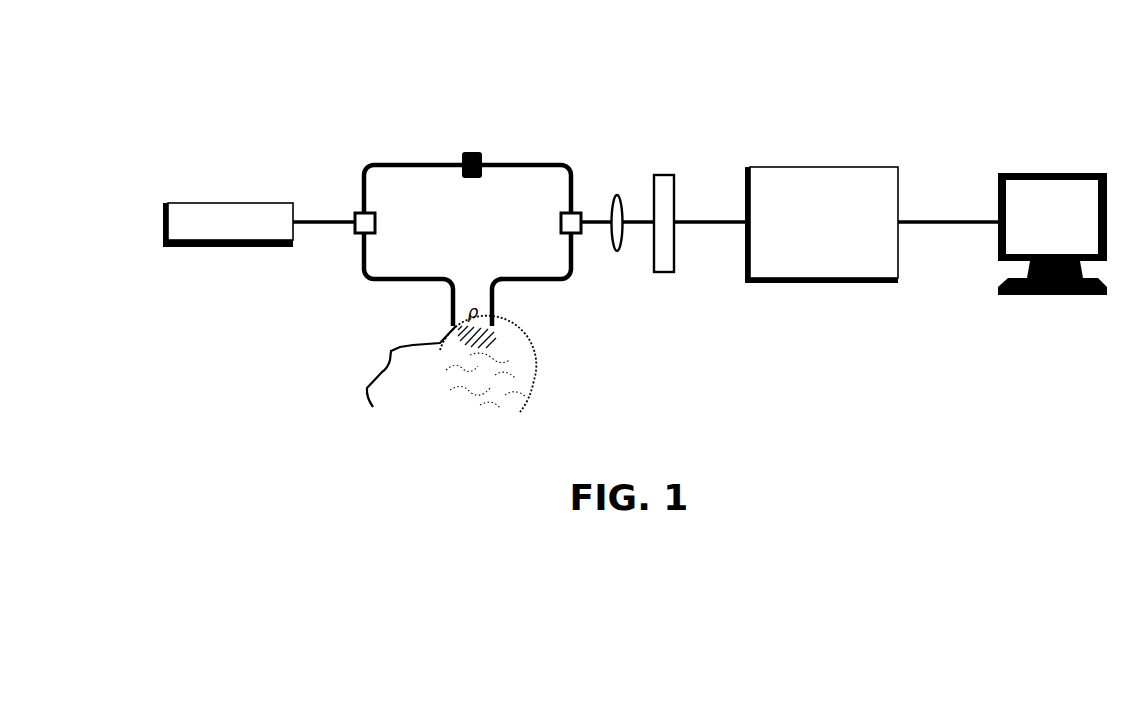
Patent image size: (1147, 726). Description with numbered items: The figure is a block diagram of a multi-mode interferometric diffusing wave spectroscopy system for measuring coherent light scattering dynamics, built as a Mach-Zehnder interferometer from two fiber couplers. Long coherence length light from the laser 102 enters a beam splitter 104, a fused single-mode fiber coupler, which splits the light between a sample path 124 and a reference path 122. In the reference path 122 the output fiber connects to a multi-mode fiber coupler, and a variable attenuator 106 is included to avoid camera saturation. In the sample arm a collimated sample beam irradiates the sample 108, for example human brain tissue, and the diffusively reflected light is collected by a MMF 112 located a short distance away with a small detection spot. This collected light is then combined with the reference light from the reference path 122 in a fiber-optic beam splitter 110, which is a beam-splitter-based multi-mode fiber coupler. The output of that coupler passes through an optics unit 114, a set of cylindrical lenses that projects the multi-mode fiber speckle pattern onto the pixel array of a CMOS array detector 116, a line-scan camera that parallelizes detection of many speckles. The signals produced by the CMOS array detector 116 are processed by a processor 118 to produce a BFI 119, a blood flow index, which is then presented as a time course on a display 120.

The laser 102 is at (259, 225).
The beam splitter 104 is at (355, 219).
The variable attenuator 106 is at (472, 152).
The sample 108 is at (451, 374).
The beam splitter 110 is at (577, 213).
The MMF 112 is at (560, 284).
The optics unit 114 is at (617, 252).
The CMOS array detector 116 is at (665, 175).
The processor 118 is at (821, 225).
The BFI 119 is at (948, 205).
The display 120 is at (1052, 256).
The reference path 122 is at (391, 167).
The sample path 124 is at (393, 282).